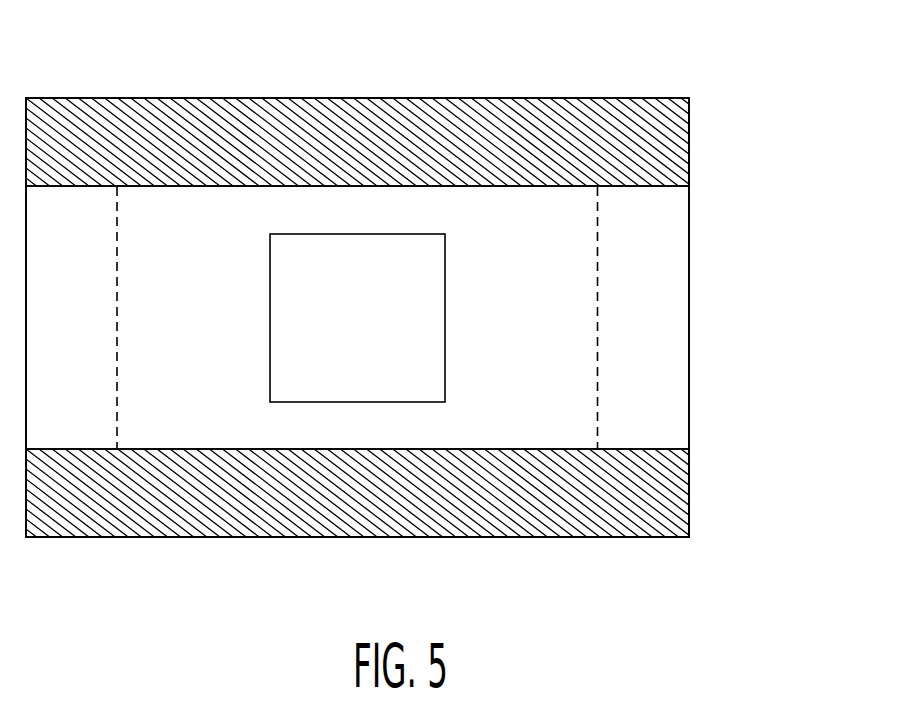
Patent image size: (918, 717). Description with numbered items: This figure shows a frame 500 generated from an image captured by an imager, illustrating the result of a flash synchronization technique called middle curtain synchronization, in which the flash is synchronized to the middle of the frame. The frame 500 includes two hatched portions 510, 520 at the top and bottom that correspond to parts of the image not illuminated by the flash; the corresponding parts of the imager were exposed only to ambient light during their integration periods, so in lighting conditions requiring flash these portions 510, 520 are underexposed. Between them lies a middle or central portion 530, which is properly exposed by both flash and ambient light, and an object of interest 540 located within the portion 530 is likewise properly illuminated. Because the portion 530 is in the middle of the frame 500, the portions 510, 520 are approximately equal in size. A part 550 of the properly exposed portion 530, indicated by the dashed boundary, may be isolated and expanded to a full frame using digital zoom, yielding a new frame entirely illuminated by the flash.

The frame 500 is at (758, 79).
The portion 510 is at (673, 146).
The portion 520 is at (678, 490).
The middle portion 530 is at (668, 224).
The object of interest 540 is at (445, 295).
The part 550 is at (599, 409).